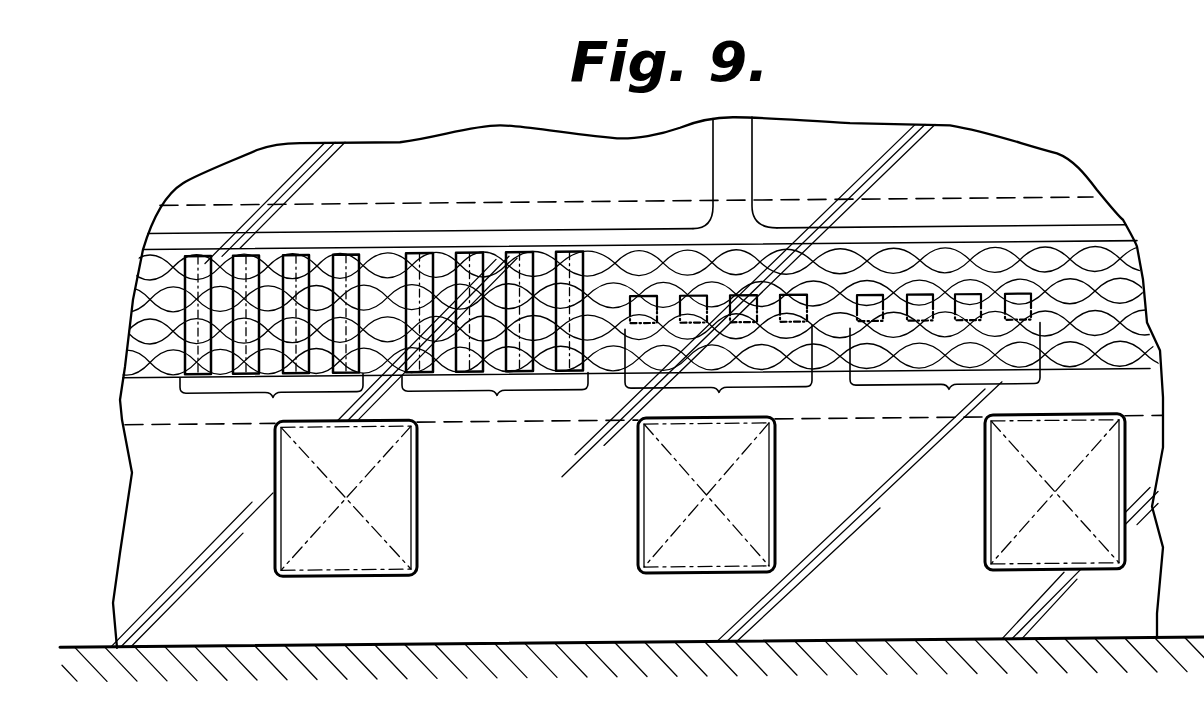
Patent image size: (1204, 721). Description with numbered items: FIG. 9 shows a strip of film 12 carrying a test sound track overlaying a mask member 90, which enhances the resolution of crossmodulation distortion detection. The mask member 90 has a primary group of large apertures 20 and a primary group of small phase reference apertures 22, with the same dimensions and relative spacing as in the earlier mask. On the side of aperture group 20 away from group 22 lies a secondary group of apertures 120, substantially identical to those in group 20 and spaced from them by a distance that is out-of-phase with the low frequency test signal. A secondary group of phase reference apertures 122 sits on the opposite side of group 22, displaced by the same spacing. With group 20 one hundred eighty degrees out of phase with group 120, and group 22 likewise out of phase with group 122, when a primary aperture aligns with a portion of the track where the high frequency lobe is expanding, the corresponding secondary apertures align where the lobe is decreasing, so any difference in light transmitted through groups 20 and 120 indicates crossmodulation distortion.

The seat cushion body 12 is at (978, 150).
The mask member 90 is at (467, 196).
The secondary group of apertures 120 is at (271, 338).
The primary group of large apertures 20 is at (495, 336).
The primary group of small apertures 22 is at (718, 357).
The secondary group of phase reference apertures 122 is at (945, 354).